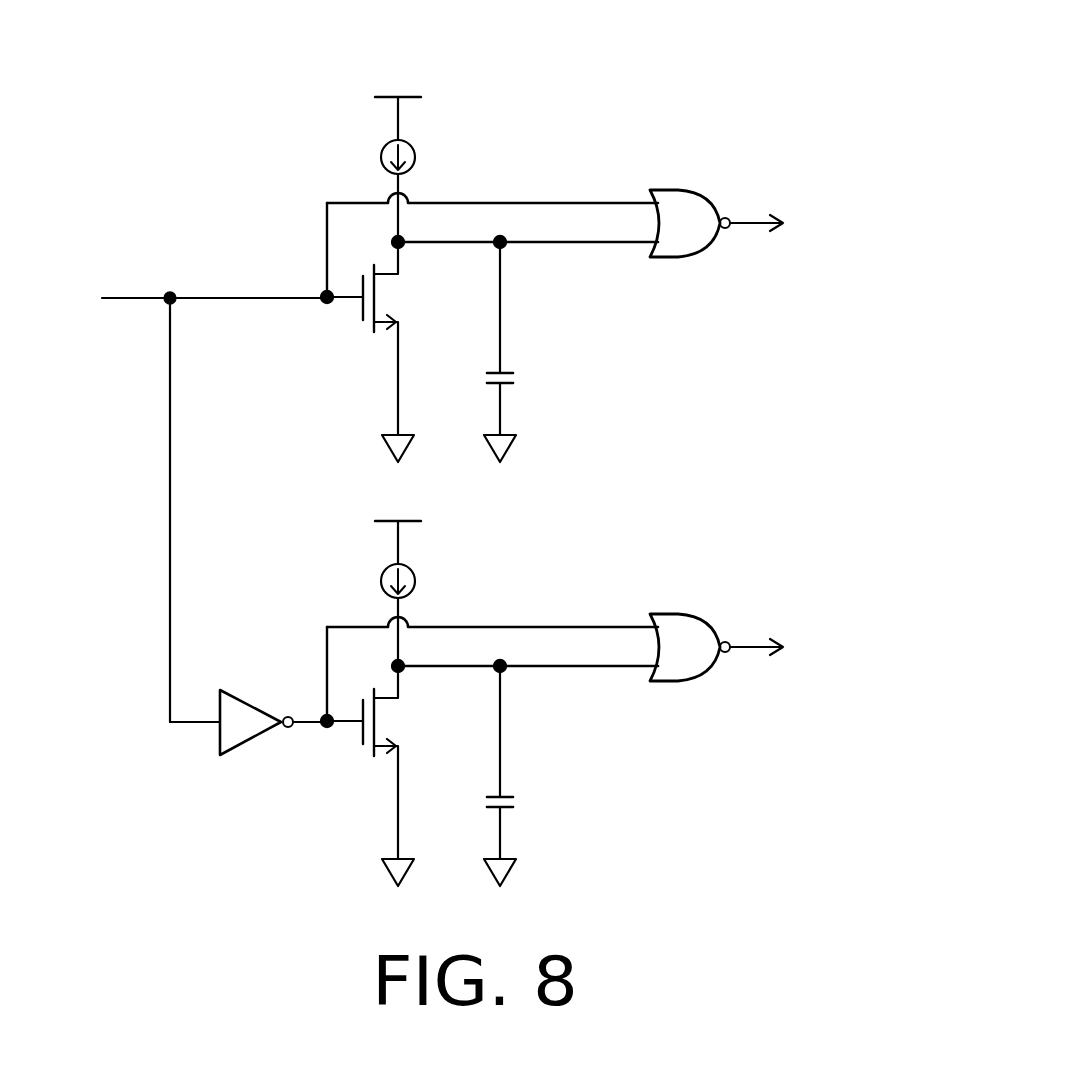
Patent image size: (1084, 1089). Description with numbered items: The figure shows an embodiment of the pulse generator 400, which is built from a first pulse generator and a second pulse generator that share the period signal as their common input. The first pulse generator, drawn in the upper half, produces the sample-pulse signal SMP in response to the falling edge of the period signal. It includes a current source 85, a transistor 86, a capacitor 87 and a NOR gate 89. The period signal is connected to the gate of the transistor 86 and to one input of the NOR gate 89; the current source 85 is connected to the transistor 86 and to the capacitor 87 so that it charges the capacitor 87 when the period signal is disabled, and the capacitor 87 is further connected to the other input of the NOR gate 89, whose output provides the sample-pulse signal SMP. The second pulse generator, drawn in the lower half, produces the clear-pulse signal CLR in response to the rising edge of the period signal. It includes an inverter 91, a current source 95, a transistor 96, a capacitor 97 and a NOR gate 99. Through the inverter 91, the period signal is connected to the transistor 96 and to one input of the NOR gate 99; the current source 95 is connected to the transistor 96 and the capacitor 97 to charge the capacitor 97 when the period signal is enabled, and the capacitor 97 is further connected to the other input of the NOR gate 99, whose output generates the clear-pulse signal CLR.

The current source 85 is at (381, 165).
The transistor 86 is at (376, 292).
The capacitor 87 is at (512, 374).
The NOR gate 89 is at (708, 192).
The inverter 91 is at (253, 742).
The current source 95 is at (371, 569).
The transistor 96 is at (388, 776).
The capacitor 97 is at (534, 776).
The NOR gate 99 is at (745, 606).
The pulse generator 400 is at (953, 935).